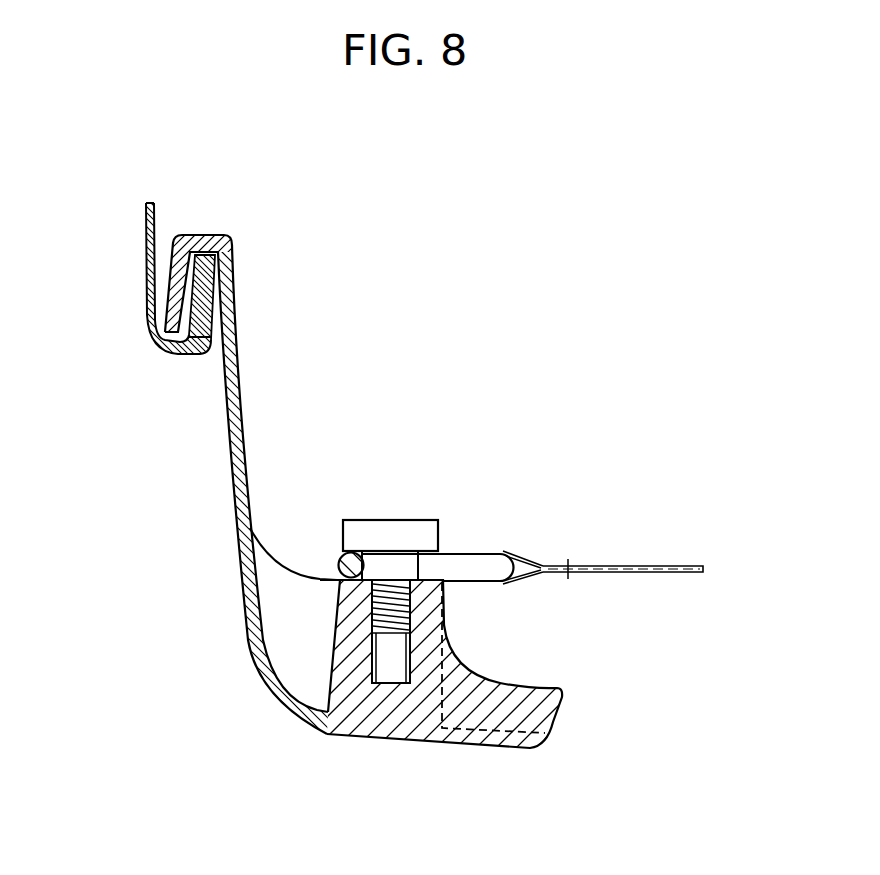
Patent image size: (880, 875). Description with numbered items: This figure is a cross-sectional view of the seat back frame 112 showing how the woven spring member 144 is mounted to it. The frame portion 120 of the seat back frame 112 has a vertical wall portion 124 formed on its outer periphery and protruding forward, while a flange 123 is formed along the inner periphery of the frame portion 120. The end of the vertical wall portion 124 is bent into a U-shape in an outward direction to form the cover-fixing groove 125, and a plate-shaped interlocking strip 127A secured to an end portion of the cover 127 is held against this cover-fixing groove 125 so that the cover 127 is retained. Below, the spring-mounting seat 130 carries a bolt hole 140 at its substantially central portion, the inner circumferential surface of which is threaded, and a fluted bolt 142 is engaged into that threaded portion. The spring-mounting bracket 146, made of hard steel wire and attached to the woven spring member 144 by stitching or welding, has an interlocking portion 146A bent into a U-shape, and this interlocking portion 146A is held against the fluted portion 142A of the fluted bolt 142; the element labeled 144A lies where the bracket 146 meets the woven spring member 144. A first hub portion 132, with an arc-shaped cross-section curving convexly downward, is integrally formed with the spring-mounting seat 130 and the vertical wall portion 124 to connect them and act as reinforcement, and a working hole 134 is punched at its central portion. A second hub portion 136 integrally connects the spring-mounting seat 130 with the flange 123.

The seat back frame 112 is at (252, 391).
The frame portion 120 is at (473, 718).
The flange 123 is at (553, 725).
The vertical wall portion 124 is at (238, 442).
The cover-fixing groove 125 is at (197, 238).
The cover 127 is at (143, 295).
The interlocking strip 127A is at (190, 357).
The spring-mounting seat 130 is at (447, 580).
The first hub portion 132 is at (283, 563).
The working hole 134 is at (258, 633).
The second hub portion 136 is at (483, 682).
The bolt hole 140 is at (385, 680).
The fluted bolt 142 is at (383, 533).
The fluted portion 142A is at (398, 567).
The woven spring member 144 is at (660, 568).
The strap connector 144A is at (543, 565).
The spring-mounting bracket 146 is at (517, 585).
The interlocking portion 146A is at (337, 556).